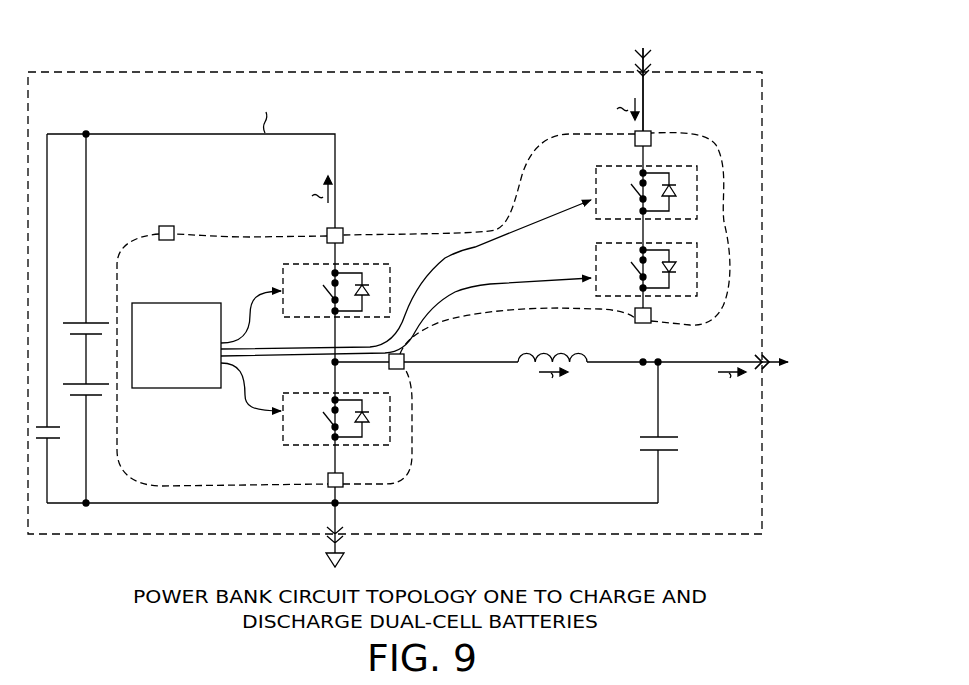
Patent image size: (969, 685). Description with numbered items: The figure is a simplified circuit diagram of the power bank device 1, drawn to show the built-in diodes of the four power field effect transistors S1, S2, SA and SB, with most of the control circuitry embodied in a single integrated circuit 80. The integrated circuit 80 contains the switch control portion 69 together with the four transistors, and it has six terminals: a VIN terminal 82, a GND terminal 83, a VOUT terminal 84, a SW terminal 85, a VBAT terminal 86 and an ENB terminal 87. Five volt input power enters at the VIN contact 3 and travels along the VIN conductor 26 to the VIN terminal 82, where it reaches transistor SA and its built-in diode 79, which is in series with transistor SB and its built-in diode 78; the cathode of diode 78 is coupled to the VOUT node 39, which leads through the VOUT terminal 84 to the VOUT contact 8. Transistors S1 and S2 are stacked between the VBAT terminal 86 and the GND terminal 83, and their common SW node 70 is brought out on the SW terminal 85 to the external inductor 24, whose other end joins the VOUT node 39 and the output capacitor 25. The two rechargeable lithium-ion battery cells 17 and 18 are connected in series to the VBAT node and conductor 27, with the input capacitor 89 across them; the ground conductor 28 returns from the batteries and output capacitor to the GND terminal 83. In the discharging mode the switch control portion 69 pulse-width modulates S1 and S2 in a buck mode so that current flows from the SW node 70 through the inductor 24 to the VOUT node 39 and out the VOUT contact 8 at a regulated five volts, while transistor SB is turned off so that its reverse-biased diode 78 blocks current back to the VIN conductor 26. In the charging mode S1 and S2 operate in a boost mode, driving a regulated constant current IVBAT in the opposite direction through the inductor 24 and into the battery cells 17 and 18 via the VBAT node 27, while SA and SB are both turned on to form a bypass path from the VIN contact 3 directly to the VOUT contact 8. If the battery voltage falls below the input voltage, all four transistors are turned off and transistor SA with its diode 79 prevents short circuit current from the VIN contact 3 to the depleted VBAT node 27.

The power bank device 1 is at (188, 72).
The VIN contact 3 is at (641, 77).
The VOUT contact 8 is at (757, 359).
The battery cell 17 is at (73, 323).
The battery cell 18 is at (73, 385).
The inductor 24 is at (556, 353).
The output capacitor 25 is at (631, 443).
The VIN conductor 26 is at (645, 101).
The VBAT node and conductor 27 is at (143, 138).
The ground conductor 28 is at (524, 502).
The VOUT node 39 is at (693, 364).
The switch control portion 69 is at (186, 378).
The SW node 70 is at (478, 362).
The built-in diode of transistor SB 78 is at (672, 268).
The built-in diode of transistor SA 79 is at (672, 191).
The integrated circuit 80 is at (460, 227).
The VIN terminal 82 is at (651, 140).
The GND terminal 83 is at (328, 480).
The VOUT terminal 84 is at (635, 318).
The SW terminal 85 is at (404, 357).
The VBAT terminal 86 is at (343, 231).
The ENB terminal 87 is at (174, 229).
The input capacitor 89 is at (52, 440).